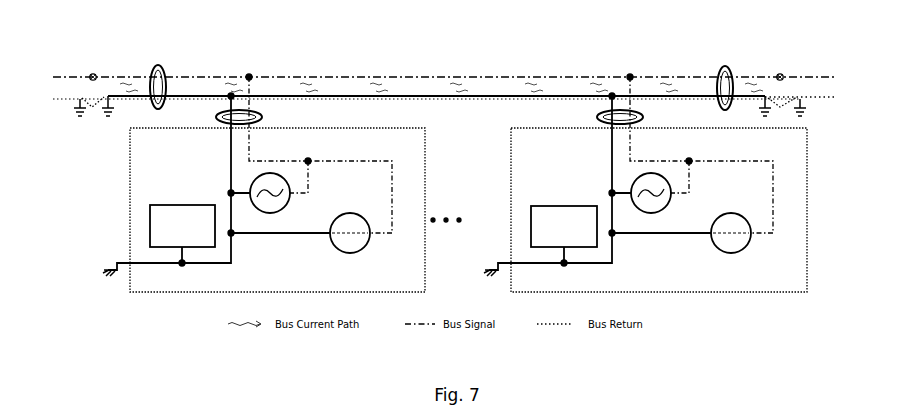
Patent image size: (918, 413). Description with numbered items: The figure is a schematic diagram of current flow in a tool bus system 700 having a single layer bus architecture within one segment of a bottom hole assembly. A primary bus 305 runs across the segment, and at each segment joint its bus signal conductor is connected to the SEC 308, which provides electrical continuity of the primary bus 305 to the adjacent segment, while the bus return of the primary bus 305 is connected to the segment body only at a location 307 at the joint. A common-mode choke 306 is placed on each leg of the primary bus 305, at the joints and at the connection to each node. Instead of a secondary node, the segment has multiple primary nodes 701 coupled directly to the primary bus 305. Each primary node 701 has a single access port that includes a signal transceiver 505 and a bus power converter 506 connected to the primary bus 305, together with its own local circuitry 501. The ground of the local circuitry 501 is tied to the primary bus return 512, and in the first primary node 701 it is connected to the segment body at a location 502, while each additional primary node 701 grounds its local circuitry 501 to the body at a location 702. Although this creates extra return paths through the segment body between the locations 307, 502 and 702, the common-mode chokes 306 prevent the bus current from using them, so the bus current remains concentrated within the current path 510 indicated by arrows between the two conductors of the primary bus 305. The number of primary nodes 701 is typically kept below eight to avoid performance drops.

The tool bus system 700 is at (108, 17).
The primary bus 305 is at (596, 74).
The current path 510 is at (545, 75).
The common-mode choke 306 is at (230, 110).
The location 307 is at (118, 121).
The SEC 308 is at (97, 74).
The primary node 701 is at (128, 186).
The primary bus return 512 is at (228, 194).
The signal transceiver 505 is at (270, 172).
The bus power converter 506 is at (345, 212).
The local circuitry 501 is at (146, 226).
The location 502 is at (100, 272).
The location 702 is at (493, 266).